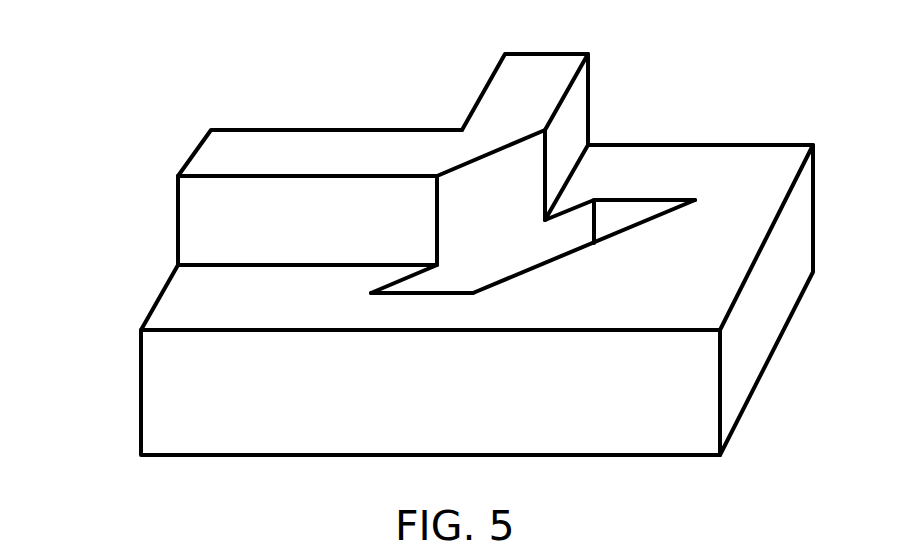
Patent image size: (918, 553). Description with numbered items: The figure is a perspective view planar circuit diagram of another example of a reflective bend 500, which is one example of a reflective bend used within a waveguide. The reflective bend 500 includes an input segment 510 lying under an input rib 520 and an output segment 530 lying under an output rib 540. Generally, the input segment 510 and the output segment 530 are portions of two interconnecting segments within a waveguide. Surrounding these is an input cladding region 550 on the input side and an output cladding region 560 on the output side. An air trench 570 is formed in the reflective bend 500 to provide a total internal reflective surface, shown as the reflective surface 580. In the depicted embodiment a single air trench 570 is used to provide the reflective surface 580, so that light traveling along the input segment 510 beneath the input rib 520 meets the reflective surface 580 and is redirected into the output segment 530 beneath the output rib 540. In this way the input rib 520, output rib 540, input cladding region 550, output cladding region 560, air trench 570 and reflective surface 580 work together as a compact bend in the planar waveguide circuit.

The reflective bend 500 is at (95, 53).
The input segment 510 is at (146, 238).
The input rib 520 is at (327, 137).
The output segment 530 is at (615, 120).
The output rib 540 is at (540, 63).
The input cladding region 550 is at (165, 294).
The output cladding region 560 is at (698, 155).
The air trench 570 is at (595, 268).
The reflective surface 580 is at (515, 262).